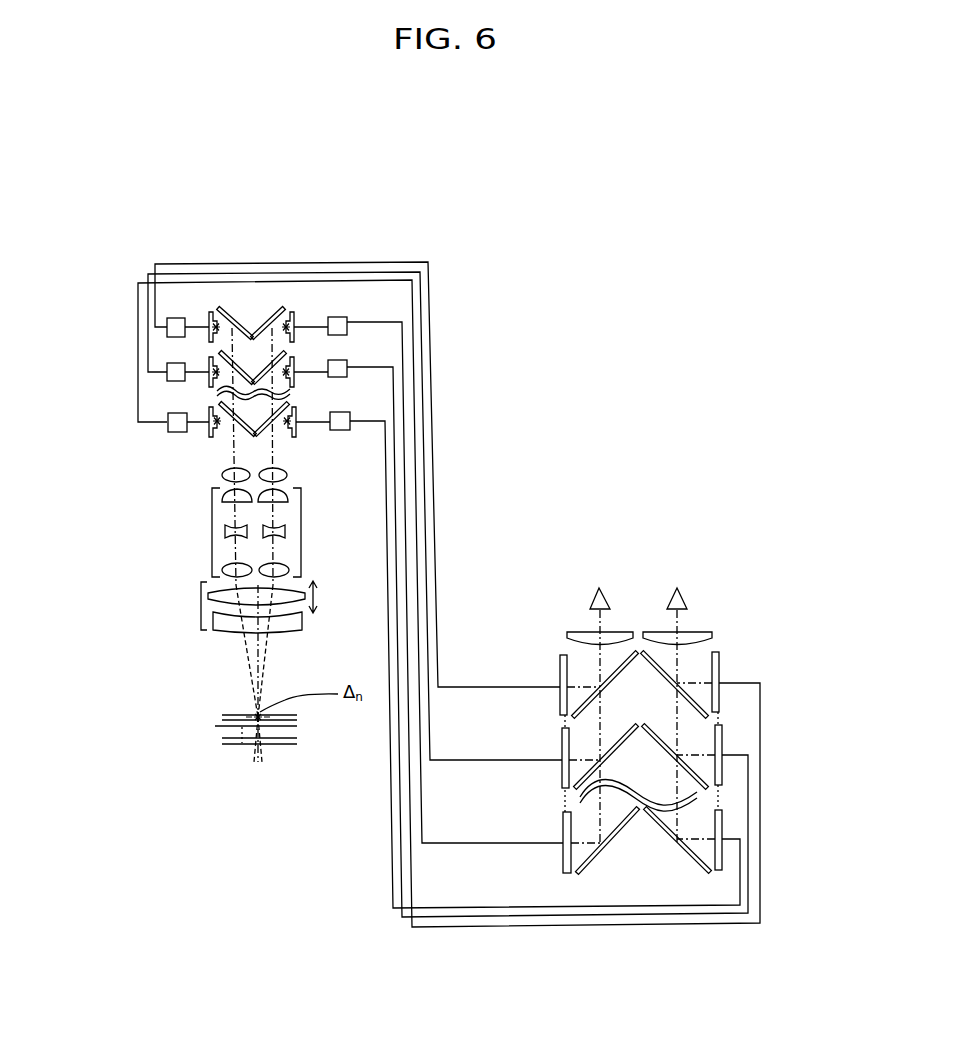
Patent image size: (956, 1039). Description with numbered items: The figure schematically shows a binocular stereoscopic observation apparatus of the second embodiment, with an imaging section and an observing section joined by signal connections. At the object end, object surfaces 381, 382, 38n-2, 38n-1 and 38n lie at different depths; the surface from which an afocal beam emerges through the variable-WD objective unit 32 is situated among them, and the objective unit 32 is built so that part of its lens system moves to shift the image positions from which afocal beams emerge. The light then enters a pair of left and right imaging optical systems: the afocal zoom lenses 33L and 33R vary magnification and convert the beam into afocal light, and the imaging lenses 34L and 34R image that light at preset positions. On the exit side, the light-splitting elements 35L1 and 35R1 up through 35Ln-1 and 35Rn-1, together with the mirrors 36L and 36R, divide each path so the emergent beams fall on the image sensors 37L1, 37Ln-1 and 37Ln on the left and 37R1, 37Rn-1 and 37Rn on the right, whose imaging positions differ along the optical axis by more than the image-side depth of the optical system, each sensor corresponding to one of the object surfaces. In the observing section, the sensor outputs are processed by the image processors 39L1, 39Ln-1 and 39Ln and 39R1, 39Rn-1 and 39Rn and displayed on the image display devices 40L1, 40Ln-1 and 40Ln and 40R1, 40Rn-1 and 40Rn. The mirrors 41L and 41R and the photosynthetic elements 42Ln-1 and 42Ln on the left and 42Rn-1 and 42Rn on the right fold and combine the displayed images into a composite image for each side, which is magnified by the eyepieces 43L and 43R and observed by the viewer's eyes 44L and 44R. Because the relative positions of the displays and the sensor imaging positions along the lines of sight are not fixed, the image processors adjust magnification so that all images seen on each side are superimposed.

The variable-WD objective unit 32 is at (203, 598).
The left afocal zoom lens 33L is at (210, 558).
The right afocal zoom lens 33R is at (302, 558).
The left imaging lens 34L is at (212, 533).
The right imaging lens 34R is at (301, 533).
The first left light-splitting element 35L1 is at (223, 477).
The first right light-splitting element 35R1 is at (287, 477).
The (n-1)th left light-splitting element 35Ln-1 is at (222, 394).
The (n-1)th right light-splitting element 35Rn-1 is at (283, 387).
The left mirror 36L is at (235, 315).
The right mirror 36R is at (274, 314).
The nth left image sensor 37Ln is at (209, 325).
The (n-1)th left image sensor 37Ln-1 is at (209, 372).
The first left image sensor 37L1 is at (210, 433).
The nth right image sensor 37Rn is at (294, 323).
The (n-1)th right image sensor 37Rn-1 is at (294, 368).
The first right image sensor 37R1 is at (293, 433).
The nth left image processor 39Ln is at (176, 330).
The (n-1)th left image processor 39Ln-1 is at (174, 376).
The first left image processor 39L1 is at (177, 434).
The nth right image processor 39Rn is at (347, 320).
The (n-1)th right image processor 39Rn-1 is at (347, 365).
The first right image processor 39R1 is at (338, 432).
The nth object surface 38n is at (222, 715).
The (n-1)th object surface 38n-1 is at (222, 720).
The (n-2)th object surface 38n-2 is at (215, 726).
The second object surface 382 is at (222, 738).
The first object surface 381 is at (222, 744).
The nth left image display device 40Ln is at (560, 673).
The (n-1)th left image display device 40Ln-1 is at (562, 746).
The first left image display device 40L1 is at (563, 833).
The nth right image display device 40Rn is at (719, 673).
The (n-1)th right image display device 40Rn-1 is at (722, 745).
The first right image display device 40R1 is at (722, 830).
The left mirror 41L is at (598, 862).
The right mirror 41R is at (697, 862).
The nth left photosynthetic element 42Ln is at (573, 718).
The (n-1)th left photosynthetic element 42Ln-1 is at (577, 791).
The nth right photosynthetic element 42Rn is at (707, 716).
The (n-1)th right photosynthetic element 42Rn-1 is at (710, 790).
The left eyepiece 43L is at (566, 639).
The right eyepiece 43R is at (713, 638).
The left eye 44L is at (590, 603).
The right eye 44R is at (687, 603).